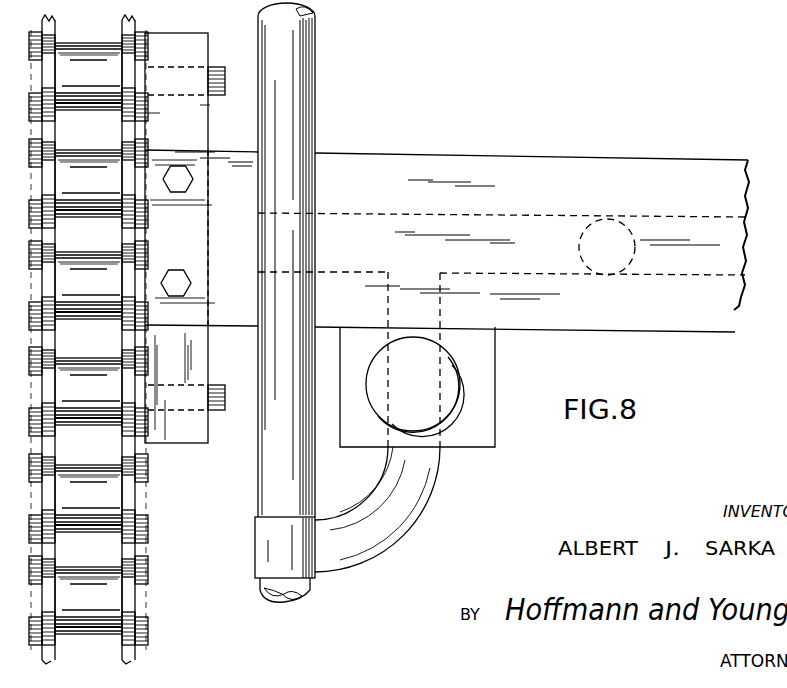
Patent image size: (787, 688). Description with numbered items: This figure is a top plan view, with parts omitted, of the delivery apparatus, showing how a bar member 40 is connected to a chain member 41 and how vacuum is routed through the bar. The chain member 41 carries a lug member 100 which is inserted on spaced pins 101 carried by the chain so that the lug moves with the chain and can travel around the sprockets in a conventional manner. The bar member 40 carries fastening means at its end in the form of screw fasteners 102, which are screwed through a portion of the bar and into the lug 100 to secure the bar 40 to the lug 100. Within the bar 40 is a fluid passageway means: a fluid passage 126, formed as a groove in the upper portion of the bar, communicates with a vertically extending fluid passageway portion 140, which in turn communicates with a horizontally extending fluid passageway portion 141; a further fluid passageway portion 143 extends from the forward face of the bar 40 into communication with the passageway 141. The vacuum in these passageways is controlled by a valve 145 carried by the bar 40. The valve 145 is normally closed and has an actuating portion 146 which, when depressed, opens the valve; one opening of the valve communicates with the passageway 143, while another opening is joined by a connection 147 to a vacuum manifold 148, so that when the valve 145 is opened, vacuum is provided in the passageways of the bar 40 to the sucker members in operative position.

The bar member 40 is at (507, 172).
The chain member 41 is at (127, 603).
The lug member 100 is at (197, 432).
The pins 101 is at (228, 78).
The screw fasteners 102 is at (180, 183).
The fluid passage 126 is at (722, 238).
The fluid passageway portion 140 is at (611, 237).
The fluid passageway portion 141 is at (348, 232).
The fluid passageway portion 143 is at (423, 317).
The valve 145 is at (495, 434).
The actuating portion 146 is at (440, 388).
The connection 147 is at (413, 475).
The vacuum manifold 148 is at (298, 480).